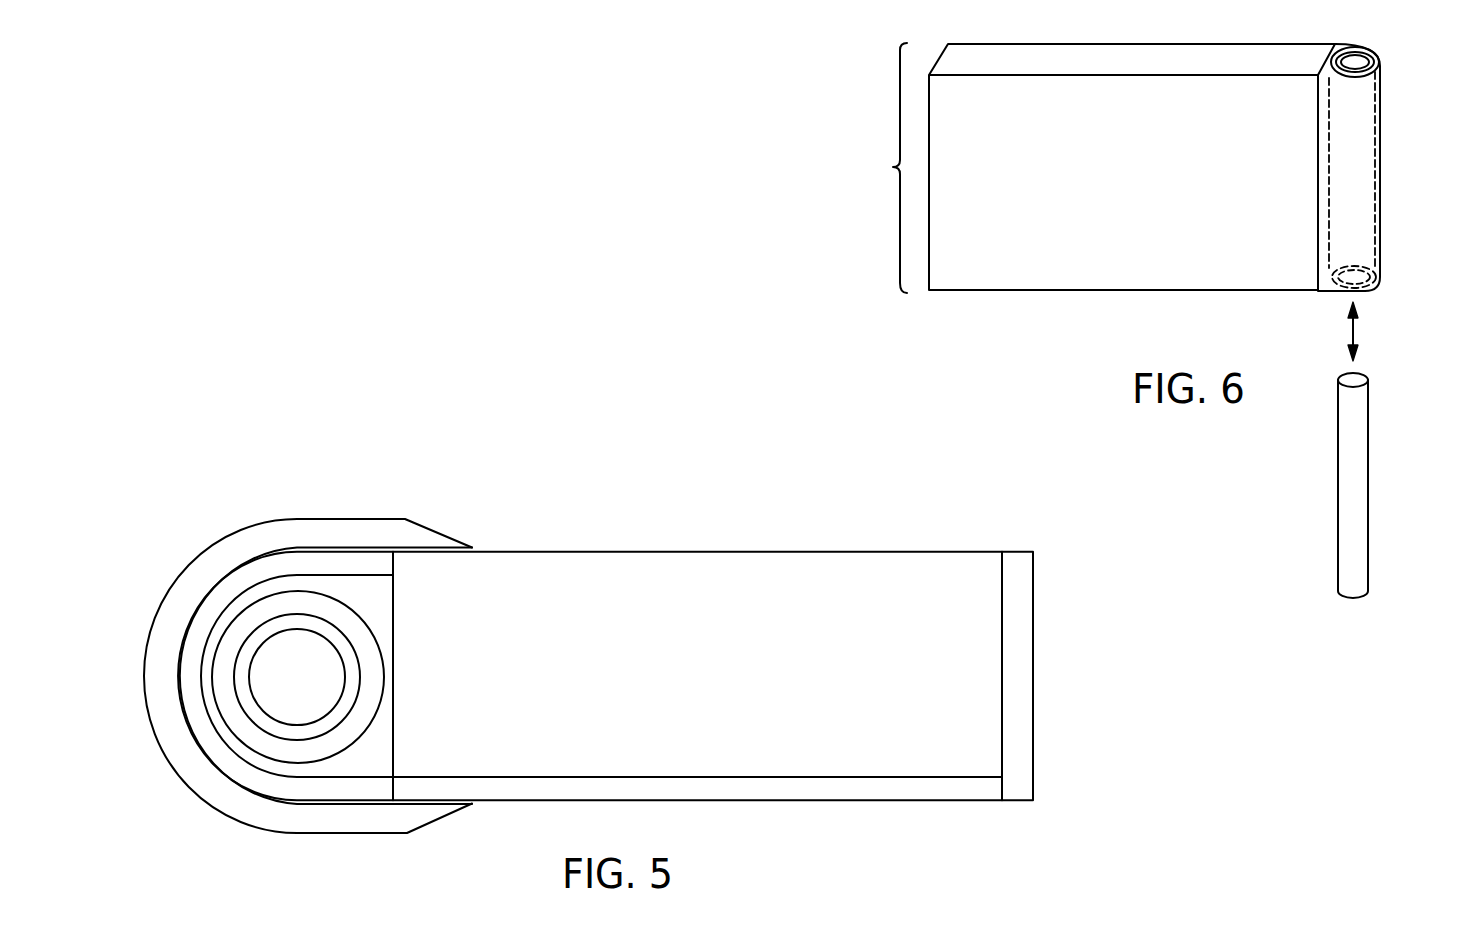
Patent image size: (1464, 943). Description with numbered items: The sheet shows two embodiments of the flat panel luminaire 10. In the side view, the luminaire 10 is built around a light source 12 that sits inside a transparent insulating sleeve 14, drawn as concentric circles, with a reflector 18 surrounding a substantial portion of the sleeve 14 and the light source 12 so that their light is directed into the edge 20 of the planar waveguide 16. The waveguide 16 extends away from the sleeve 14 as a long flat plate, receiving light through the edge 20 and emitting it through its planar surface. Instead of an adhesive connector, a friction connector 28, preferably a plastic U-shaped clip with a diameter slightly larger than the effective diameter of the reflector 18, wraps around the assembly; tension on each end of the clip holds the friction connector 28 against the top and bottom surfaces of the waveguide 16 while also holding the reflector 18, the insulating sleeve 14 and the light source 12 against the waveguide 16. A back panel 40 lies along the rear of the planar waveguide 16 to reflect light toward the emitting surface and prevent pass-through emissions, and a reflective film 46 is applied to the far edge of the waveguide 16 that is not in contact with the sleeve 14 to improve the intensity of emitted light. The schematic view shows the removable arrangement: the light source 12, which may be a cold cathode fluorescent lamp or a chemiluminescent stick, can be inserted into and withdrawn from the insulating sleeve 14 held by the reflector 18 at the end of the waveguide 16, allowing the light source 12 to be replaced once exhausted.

In FIG. 5, the flat panel luminaire 10 is at (183, 494).
In FIG. 6, the flat panel luminaire 10 is at (893, 167).
In FIG. 5, the light source 12 is at (282, 700).
In FIG. 6, the light source 12 is at (1368, 458).
In FIG. 5, the transparent insulating sleeve 14 is at (220, 702).
In FIG. 6, the transparent insulating sleeve 14 is at (1355, 55).
In FIG. 5, the planar waveguide 16 is at (835, 593).
In FIG. 5, the reflector 18 is at (187, 670).
In FIG. 6, the reflector 18 is at (1380, 162).
In FIG. 5, the edge 20 is at (392, 760).
In FIG. 5, the friction connector 28 is at (310, 528).
In FIG. 5, the back panel 40 is at (712, 790).
In FIG. 5, the reflective film 46 is at (1033, 702).